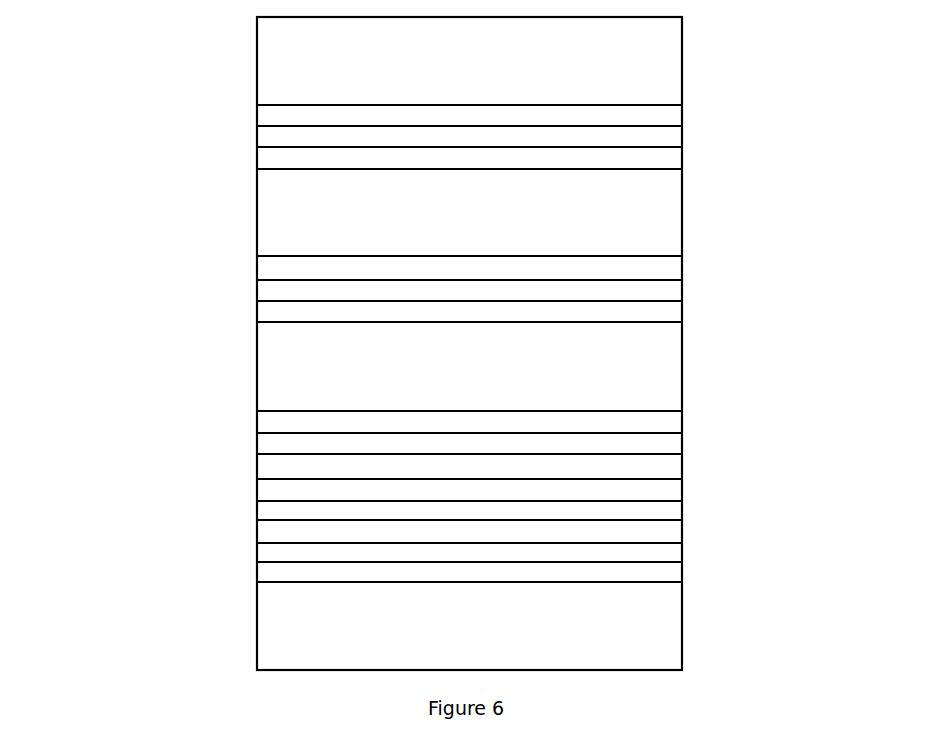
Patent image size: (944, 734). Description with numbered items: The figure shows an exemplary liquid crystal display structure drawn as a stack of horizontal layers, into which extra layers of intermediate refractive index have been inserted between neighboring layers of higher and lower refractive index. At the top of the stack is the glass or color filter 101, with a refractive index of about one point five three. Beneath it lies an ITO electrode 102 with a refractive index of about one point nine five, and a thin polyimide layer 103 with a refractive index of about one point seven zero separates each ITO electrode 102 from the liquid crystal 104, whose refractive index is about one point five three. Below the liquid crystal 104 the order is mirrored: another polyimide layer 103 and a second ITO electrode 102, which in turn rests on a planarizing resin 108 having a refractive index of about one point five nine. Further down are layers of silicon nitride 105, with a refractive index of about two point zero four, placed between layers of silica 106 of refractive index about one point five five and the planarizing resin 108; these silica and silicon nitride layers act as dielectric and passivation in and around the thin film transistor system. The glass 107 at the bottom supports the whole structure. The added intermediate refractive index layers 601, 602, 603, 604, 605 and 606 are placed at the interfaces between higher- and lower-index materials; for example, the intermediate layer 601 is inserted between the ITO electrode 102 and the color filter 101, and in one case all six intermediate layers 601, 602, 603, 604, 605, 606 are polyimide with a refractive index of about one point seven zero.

The glass or color filter 101 is at (289, 46).
The ITO electrode 102 is at (266, 134).
The polyimide layer 103 is at (266, 156).
The liquid crystal 104 is at (289, 210).
The silicon nitride layer 105 is at (266, 443).
The silica layer 106 is at (266, 488).
The glass 107 is at (275, 627).
The planarizing resin 108 is at (289, 353).
The intermediate refractive index layer 601 is at (680, 117).
The intermediate refractive index layer 602 is at (668, 313).
The intermediate refractive index layer 603 is at (668, 423).
The intermediate refractive index layer 604 is at (668, 466).
The intermediate refractive index layer 605 is at (668, 510).
The intermediate refractive index layer 606 is at (668, 554).